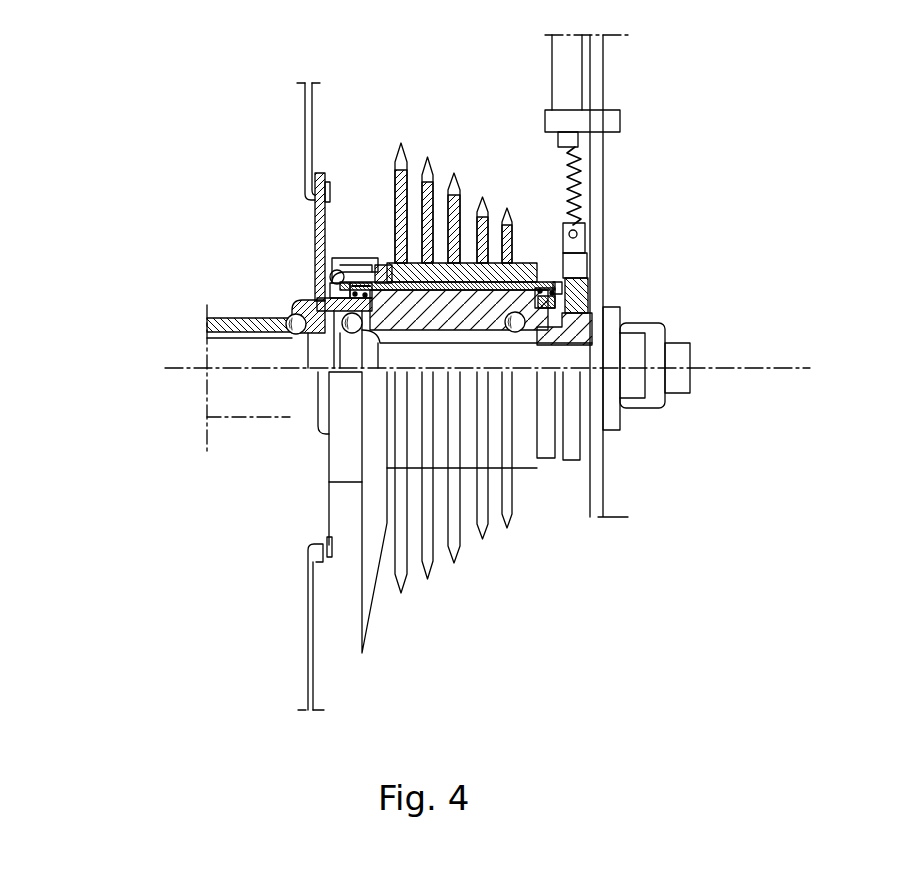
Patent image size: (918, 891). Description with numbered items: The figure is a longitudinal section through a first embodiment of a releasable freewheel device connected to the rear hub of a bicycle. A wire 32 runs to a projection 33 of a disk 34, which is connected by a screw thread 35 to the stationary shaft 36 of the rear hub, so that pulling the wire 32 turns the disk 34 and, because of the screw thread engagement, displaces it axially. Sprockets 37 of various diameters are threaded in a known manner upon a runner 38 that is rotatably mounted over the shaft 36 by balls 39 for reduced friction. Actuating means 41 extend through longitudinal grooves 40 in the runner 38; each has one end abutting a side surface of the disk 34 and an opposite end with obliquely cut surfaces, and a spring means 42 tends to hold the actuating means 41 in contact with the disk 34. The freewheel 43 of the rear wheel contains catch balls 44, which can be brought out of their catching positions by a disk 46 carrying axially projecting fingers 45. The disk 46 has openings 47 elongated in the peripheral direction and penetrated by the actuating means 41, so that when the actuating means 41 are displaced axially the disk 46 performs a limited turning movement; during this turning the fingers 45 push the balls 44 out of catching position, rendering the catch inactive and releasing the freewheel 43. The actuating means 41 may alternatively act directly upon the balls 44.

The wire 32 is at (575, 160).
The projection 33 is at (578, 230).
The disk 34 is at (583, 282).
The screw thread 35 is at (583, 310).
The stationary shaft 36 is at (633, 343).
The sprockets 37 is at (487, 202).
The runner 38 is at (443, 315).
The balls 39 is at (345, 328).
The longitudinal grooves 40 is at (350, 272).
The actuating means 41 is at (545, 290).
The spring means 42 is at (583, 322).
The freewheel 43 is at (312, 277).
The balls 44 is at (315, 283).
The fingers 45 is at (350, 278).
The disk 46 is at (367, 290).
The openings 47 is at (365, 280).